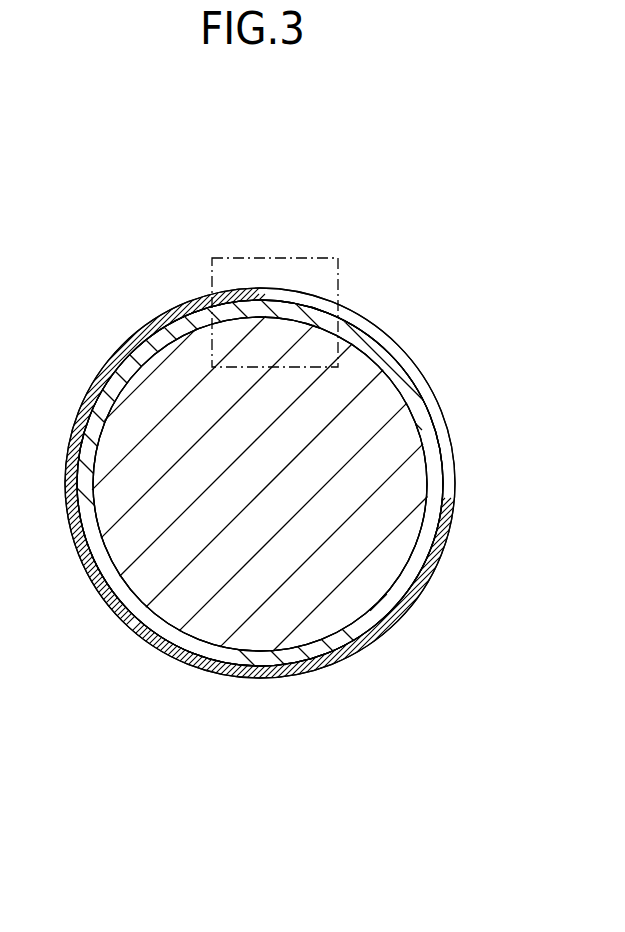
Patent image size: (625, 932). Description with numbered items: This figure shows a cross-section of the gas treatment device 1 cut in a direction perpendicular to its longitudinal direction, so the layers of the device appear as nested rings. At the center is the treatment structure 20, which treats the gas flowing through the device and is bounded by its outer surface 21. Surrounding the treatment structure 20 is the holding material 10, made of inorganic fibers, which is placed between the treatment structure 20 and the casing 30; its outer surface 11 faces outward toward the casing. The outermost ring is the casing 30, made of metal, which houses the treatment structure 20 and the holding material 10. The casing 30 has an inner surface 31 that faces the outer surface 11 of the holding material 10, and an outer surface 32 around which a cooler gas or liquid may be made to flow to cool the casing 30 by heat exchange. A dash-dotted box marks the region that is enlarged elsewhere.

The gas treatment device 1 is at (269, 174).
The holding material 10 is at (72, 450).
The outer surface of the holding material 11 is at (172, 315).
The treatment structure 20 is at (118, 497).
The outer surface of the treatment structure 21 is at (375, 347).
The casing 30 is at (400, 352).
The inner surface of the casing 31 is at (418, 398).
The outer surface of the casing 32 is at (122, 340).